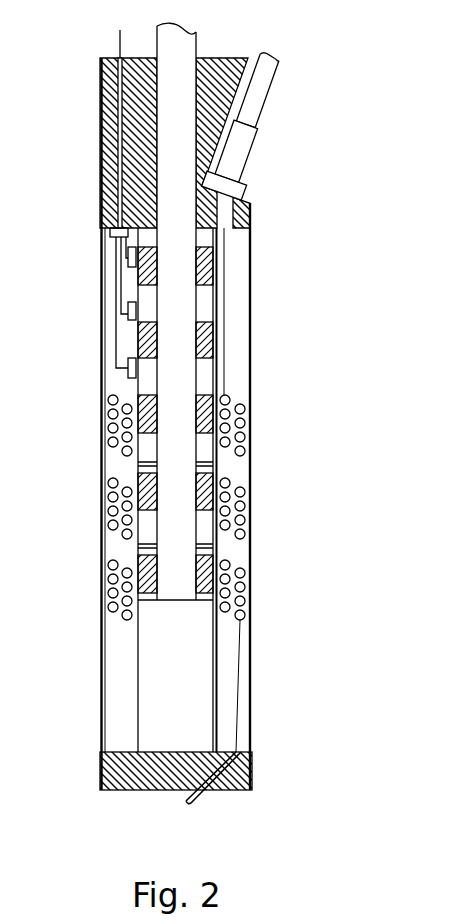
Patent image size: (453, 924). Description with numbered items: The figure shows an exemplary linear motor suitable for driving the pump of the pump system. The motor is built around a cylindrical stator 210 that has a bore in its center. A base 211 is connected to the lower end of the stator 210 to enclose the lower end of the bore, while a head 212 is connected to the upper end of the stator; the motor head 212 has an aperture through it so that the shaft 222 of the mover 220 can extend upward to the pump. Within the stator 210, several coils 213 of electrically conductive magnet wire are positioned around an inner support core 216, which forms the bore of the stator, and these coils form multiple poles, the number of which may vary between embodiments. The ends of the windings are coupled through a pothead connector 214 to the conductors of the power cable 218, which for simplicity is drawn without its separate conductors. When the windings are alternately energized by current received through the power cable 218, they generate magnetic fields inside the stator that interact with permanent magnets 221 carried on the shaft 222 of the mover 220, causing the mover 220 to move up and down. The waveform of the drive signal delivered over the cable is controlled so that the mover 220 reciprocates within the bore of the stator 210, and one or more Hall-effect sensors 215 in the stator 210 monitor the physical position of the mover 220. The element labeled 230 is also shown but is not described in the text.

The cylindrical stator 210 is at (102, 345).
The base 211 is at (252, 770).
The head 212 is at (100, 112).
The coils 213 is at (260, 400).
The pothead connector 214 is at (243, 170).
The Hall-effect sensors 215 is at (128, 259).
The inner support core 216 is at (136, 390).
The power cable 218 is at (270, 88).
The mover 220 is at (153, 608).
The permanent magnets 221 is at (223, 339).
The shaft 222 is at (157, 298).
The cable 230 is at (120, 46).